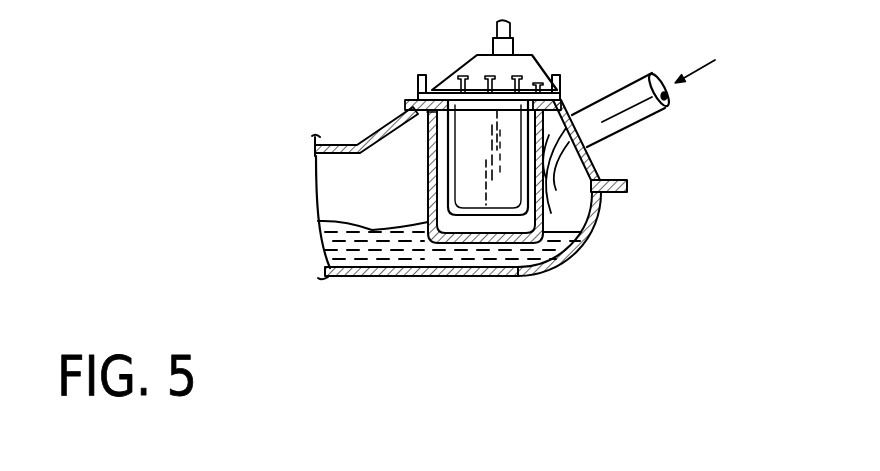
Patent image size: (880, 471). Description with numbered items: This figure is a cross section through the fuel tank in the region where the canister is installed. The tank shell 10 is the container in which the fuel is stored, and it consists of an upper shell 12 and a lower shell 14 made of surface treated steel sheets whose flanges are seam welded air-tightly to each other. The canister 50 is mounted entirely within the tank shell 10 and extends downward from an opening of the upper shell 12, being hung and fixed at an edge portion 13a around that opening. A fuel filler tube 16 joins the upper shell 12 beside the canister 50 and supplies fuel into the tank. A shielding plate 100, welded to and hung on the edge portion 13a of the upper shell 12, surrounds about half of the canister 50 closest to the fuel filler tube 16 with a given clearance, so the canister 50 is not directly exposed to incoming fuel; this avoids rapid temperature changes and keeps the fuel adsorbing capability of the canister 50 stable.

The tank shell 10 is at (598, 217).
The upper shell 12 is at (333, 147).
The edge portion 13a is at (433, 93).
The lower shell 14 is at (338, 277).
The fuel filler tube 16 is at (652, 111).
The canister 50 is at (433, 155).
The shielding plate 100 is at (483, 244).